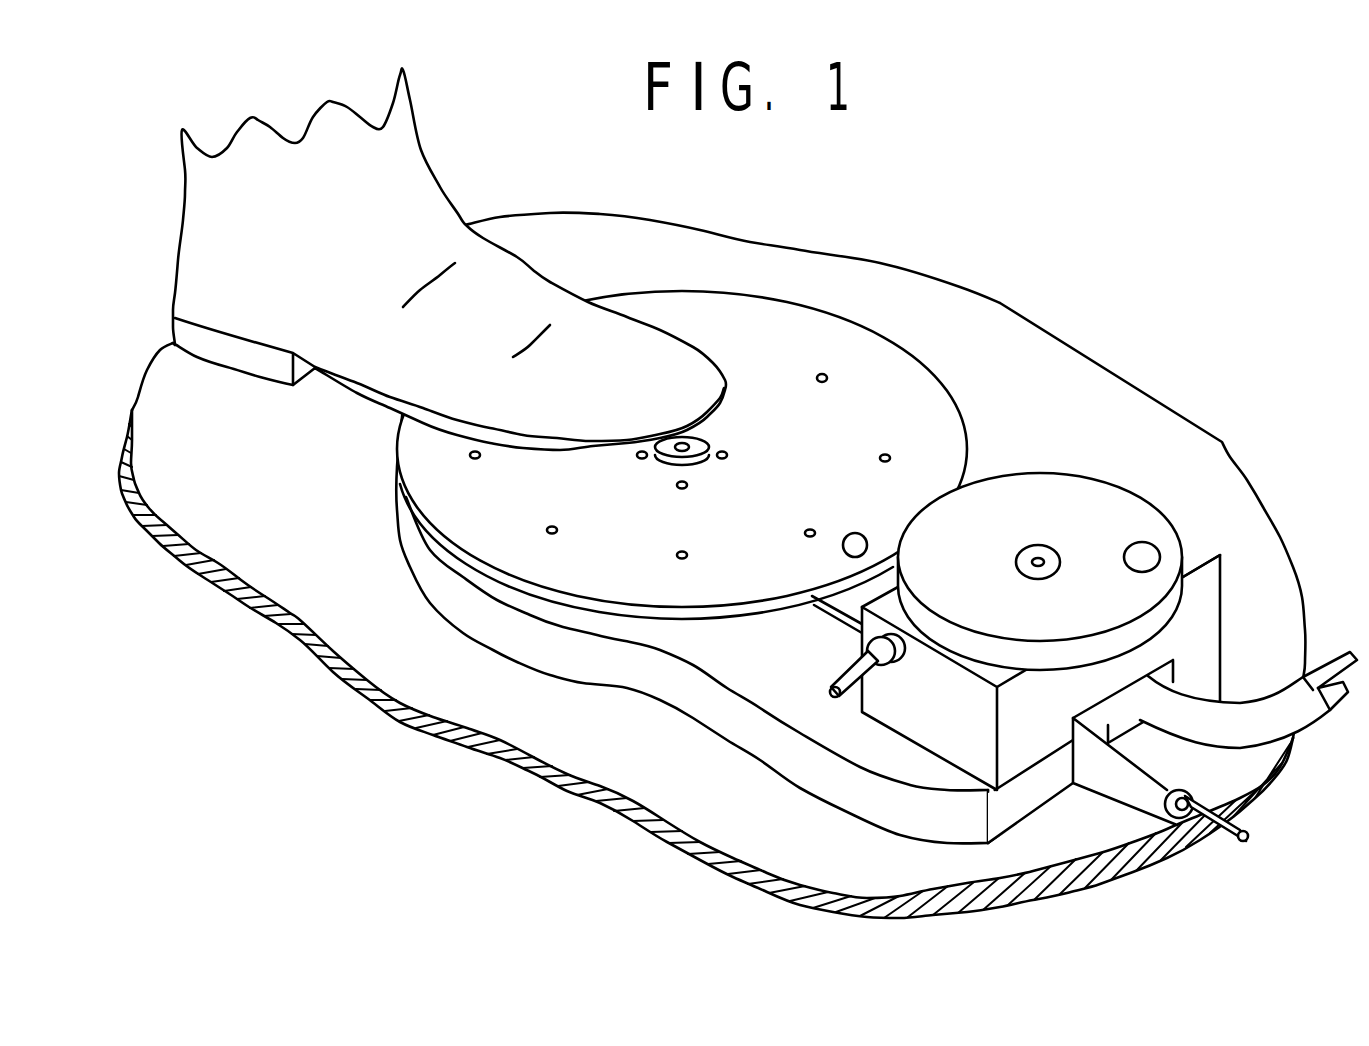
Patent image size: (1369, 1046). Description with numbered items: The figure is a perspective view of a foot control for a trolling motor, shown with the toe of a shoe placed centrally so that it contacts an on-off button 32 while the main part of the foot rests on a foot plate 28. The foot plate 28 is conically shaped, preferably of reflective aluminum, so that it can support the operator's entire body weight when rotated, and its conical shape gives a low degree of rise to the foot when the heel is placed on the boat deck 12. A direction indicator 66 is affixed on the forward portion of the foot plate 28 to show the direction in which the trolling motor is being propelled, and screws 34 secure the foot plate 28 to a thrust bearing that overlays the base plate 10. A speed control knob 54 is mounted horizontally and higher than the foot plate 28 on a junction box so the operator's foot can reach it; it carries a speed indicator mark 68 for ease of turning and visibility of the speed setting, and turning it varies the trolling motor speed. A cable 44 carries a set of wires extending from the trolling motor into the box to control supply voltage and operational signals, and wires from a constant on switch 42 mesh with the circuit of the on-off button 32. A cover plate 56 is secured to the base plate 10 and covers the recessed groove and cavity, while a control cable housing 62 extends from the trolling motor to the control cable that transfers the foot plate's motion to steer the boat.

The base plate 10 is at (697, 650).
The boat deck 12 is at (485, 695).
The foot plate 28 is at (619, 448).
The on-off button 32 is at (692, 463).
The screws 34 is at (826, 375).
The constant on switch 42 is at (887, 667).
The cable 44 is at (1228, 728).
The speed control knob 54 is at (1061, 535).
The cover plate 56 is at (845, 602).
The control cable housing 62 is at (1152, 790).
The direction indicator 66 is at (853, 534).
The speed indicator mark 68 is at (1145, 557).